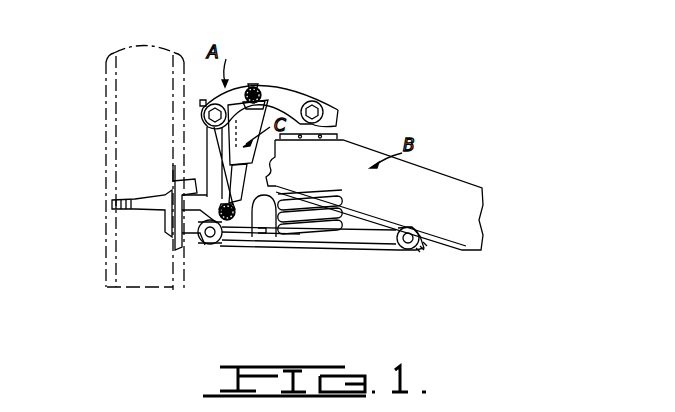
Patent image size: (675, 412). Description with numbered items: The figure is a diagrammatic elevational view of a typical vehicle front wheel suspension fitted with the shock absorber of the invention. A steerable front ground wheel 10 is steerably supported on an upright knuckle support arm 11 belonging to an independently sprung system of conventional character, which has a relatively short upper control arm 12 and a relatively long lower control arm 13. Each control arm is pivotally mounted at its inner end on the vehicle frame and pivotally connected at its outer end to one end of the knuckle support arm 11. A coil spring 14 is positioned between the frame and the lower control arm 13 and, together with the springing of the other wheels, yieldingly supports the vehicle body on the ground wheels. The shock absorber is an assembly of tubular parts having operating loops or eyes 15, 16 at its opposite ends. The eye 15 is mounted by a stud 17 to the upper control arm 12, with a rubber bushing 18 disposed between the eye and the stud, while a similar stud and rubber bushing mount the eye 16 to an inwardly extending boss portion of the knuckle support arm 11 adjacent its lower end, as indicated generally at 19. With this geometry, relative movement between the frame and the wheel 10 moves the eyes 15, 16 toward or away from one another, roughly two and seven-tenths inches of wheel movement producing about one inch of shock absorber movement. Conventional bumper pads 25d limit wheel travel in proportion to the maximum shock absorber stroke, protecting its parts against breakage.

The steerable front ground wheel 10 is at (108, 72).
The upright knuckle support arm 11 is at (213, 135).
The upper control arm 12 is at (284, 93).
The lower control arm 13 is at (368, 243).
The coil spring 14 is at (325, 225).
The eye 15 is at (262, 99).
The eye 16 is at (226, 224).
The stud 17 is at (253, 87).
The rubber bushing 18 is at (256, 87).
The lower eye mounting 19 is at (212, 246).
The bumper pads 25d is at (262, 118).